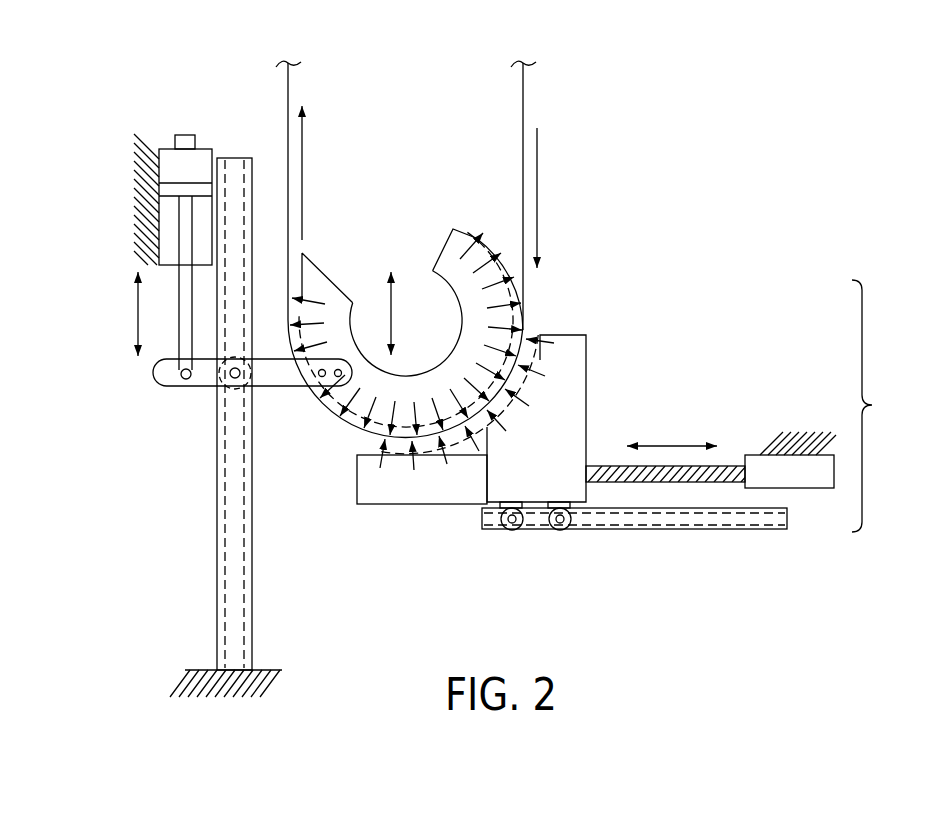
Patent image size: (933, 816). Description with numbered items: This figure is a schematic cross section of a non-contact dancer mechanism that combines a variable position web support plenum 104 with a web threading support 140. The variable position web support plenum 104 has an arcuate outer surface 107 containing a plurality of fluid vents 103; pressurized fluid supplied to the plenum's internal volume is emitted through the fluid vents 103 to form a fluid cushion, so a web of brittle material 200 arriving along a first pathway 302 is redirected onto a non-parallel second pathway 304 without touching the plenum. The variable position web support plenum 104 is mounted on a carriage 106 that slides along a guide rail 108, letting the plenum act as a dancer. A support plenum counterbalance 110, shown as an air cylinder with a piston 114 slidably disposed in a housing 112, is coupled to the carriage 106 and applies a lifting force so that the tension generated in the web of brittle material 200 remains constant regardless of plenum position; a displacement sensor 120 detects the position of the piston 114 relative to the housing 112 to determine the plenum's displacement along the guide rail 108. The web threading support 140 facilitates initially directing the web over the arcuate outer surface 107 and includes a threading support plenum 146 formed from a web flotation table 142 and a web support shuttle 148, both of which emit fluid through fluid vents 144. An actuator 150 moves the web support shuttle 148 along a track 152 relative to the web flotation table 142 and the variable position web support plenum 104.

The fluid vents 103 is at (322, 270).
The variable position web support plenum 104 is at (403, 222).
The carriage 106 is at (153, 375).
The arcuate outer surface 107 is at (467, 232).
The guide rail 108 is at (252, 553).
The support plenum counterbalance 110 is at (144, 123).
The housing 112 is at (159, 262).
The piston 114 is at (188, 183).
The displacement sensor 120 is at (187, 135).
The web threading support 140 is at (891, 406).
The web flotation table 142 is at (378, 505).
The fluid vents 144 is at (528, 376).
The threading support plenum 146 is at (630, 340).
The web support shuttle 148 is at (560, 335).
The actuator 150 is at (808, 489).
The track 152 is at (657, 530).
The web of brittle material 200 is at (296, 80).
The first pathway 302 is at (537, 197).
The second pathway 304 is at (302, 196).